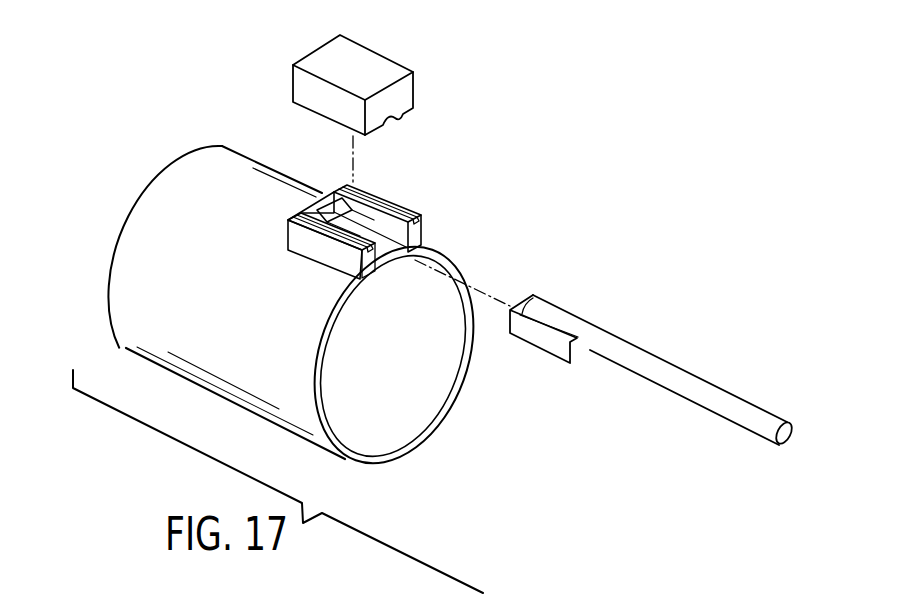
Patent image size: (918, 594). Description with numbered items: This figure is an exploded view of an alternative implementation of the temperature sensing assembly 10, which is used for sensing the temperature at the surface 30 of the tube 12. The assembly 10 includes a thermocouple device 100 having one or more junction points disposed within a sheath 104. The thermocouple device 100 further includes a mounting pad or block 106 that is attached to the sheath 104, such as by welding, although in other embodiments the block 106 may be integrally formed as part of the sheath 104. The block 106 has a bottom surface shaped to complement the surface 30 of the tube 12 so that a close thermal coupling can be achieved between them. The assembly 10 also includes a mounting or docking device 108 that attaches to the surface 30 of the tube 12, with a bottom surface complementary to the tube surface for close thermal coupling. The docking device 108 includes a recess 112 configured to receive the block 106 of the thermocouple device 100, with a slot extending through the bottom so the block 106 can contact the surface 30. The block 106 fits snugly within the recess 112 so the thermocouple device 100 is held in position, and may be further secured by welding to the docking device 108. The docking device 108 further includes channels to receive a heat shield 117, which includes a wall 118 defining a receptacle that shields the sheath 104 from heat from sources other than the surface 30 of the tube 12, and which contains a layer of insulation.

The temperature sensing assembly 10 is at (572, 60).
The tube 12 is at (284, 311).
The surface 30 is at (150, 308).
The thermocouple device 100 is at (656, 355).
The sheath 104 is at (735, 403).
The mounting pad or block 106 is at (550, 342).
The mounting or docking device 108 is at (338, 218).
The recess 112 is at (363, 227).
The heat shield 117 is at (316, 70).
The wall 118 is at (320, 100).